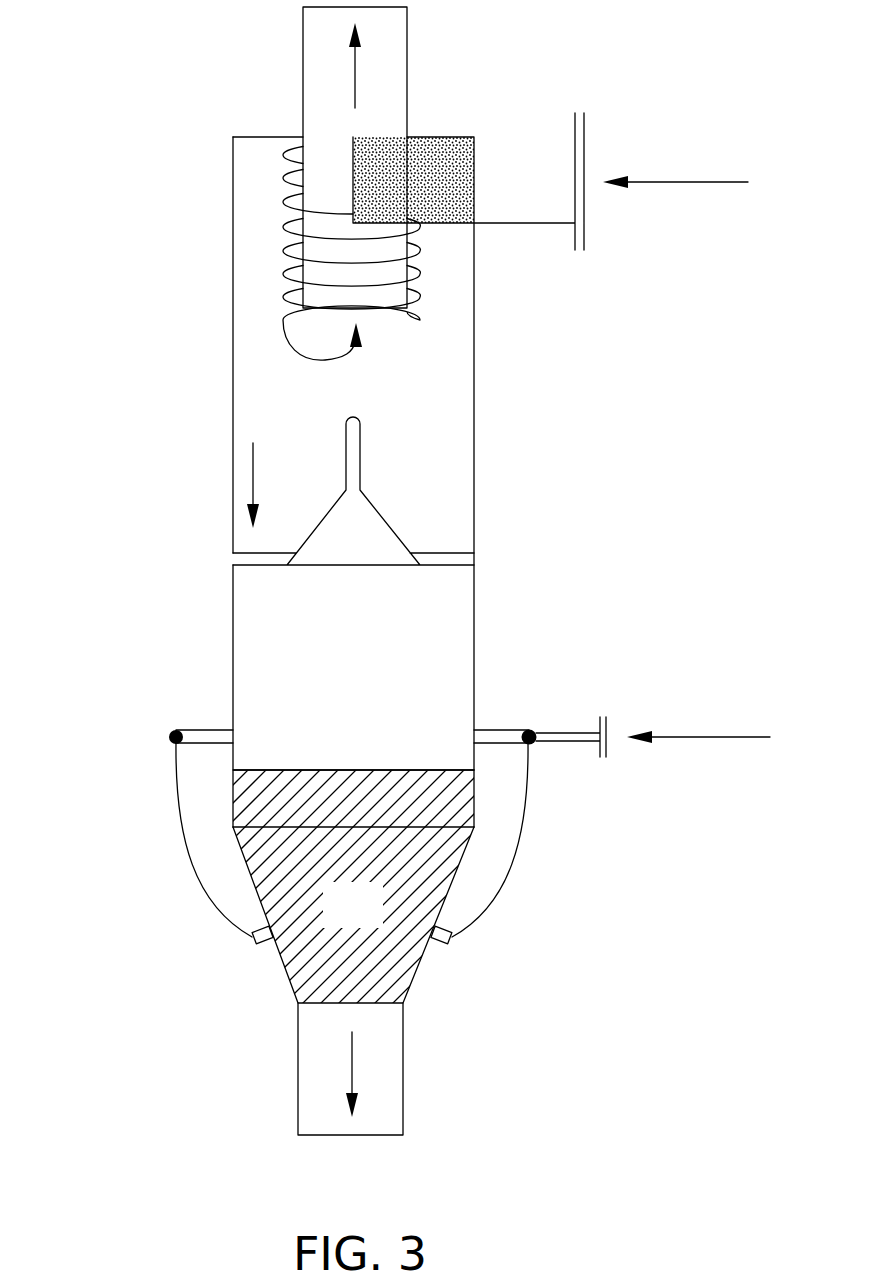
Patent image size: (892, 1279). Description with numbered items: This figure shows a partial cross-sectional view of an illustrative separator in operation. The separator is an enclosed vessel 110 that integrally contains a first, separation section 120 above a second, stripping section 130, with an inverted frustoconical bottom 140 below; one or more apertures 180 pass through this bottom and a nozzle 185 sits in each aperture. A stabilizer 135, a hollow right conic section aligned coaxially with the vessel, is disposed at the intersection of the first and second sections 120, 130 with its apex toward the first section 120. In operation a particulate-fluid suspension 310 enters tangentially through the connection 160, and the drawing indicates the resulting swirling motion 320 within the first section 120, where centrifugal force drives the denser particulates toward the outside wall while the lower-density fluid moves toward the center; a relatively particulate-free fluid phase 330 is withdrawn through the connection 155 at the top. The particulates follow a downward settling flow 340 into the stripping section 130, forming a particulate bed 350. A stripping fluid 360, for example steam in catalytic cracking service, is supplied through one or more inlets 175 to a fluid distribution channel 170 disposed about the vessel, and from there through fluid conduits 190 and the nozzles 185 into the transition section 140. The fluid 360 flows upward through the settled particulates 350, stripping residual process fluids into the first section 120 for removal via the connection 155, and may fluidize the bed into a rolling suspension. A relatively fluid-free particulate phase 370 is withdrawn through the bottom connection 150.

The enclosed vessel 110 is at (233, 137).
The separation section 120 is at (233, 398).
The stripping section 130 is at (233, 655).
The stabilizer 135 is at (380, 513).
The inverted frustoconical bottom 140 is at (423, 962).
The connection 150 is at (298, 1093).
The connection 155 is at (303, 25).
The connection 160 is at (521, 137).
The fluid distribution channel 170 is at (493, 728).
The inlet 175 is at (571, 745).
The aperture 180 is at (282, 928).
The nozzle 185 is at (240, 936).
The fluid conduit 190 is at (517, 878).
The particulate-fluid suspension 310 is at (701, 182).
The heating coil 320 is at (415, 315).
The fluid phase 330 is at (355, 72).
The downward flow 340 is at (253, 470).
The particulate bed 350 is at (327, 923).
The fluid 360 is at (727, 737).
The particulate phase 370 is at (355, 1052).